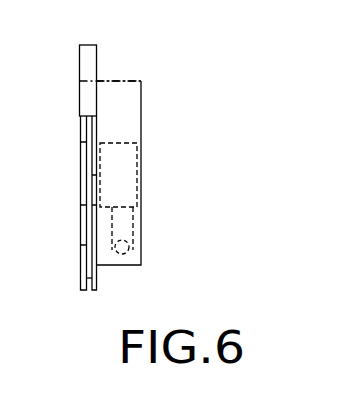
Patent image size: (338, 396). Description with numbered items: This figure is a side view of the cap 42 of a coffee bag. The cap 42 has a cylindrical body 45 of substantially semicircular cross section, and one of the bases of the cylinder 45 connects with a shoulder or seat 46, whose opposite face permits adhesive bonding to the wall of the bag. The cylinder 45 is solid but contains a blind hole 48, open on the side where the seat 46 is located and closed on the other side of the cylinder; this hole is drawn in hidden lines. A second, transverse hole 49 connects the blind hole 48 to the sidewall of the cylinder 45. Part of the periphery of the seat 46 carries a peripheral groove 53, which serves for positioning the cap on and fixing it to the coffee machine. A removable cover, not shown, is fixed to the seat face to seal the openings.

The cap 42 is at (126, 82).
The cylindrical body 45 is at (118, 107).
The seat 46 is at (80, 97).
The blind hole 48 is at (107, 173).
The transverse hole 49 is at (140, 223).
The peripheral groove 53 is at (88, 248).